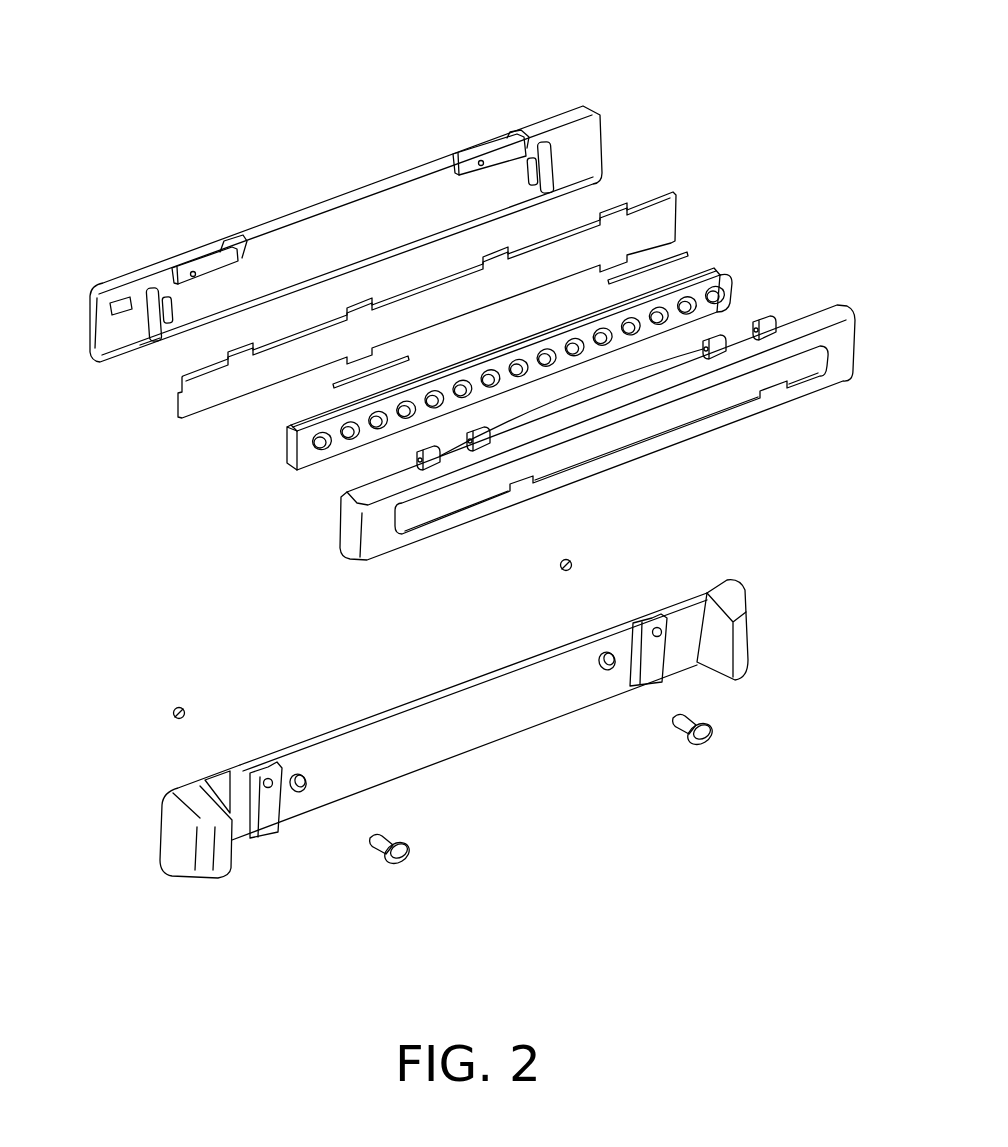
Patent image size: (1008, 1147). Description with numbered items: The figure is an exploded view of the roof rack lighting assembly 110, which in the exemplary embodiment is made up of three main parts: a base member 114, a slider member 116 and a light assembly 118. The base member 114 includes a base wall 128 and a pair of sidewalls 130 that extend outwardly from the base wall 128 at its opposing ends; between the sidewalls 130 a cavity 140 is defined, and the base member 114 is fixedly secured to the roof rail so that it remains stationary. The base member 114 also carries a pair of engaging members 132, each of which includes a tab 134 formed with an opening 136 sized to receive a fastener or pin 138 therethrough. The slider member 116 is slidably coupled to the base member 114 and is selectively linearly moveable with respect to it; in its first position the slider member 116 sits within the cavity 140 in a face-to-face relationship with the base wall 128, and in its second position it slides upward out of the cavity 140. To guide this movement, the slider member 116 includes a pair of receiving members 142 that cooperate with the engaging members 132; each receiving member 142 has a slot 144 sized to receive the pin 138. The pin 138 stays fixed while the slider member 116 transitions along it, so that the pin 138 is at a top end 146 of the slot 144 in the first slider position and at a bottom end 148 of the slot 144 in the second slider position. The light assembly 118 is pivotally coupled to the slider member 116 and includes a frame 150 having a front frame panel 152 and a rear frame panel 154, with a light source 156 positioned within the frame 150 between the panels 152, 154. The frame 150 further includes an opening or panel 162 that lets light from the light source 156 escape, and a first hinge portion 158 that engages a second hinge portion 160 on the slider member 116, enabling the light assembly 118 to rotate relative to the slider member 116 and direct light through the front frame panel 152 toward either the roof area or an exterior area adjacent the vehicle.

The roof rack lighting assembly 110 is at (202, 86).
The base member 114 is at (196, 908).
The slider member 116 is at (319, 181).
The light assembly 118 is at (876, 330).
The base wall 128 is at (468, 732).
The sidewalls 130 is at (173, 843).
The engaging members 132 is at (283, 857).
The tab 134 is at (265, 827).
The opening 136 is at (257, 775).
The pin 138 is at (572, 561).
The cavity 140 is at (548, 760).
The receiving members 142 is at (152, 290).
The slot 144 is at (163, 279).
The top end 146 is at (132, 307).
The bottom end 148 is at (141, 359).
The frame 150 is at (317, 515).
The front frame panel 152 is at (375, 540).
The rear frame panel 154 is at (192, 416).
The light source 156 is at (730, 267).
The first hinge portion 158 is at (571, 402).
The second hinge portion 160 is at (207, 266).
The opening or panel 162 is at (573, 453).